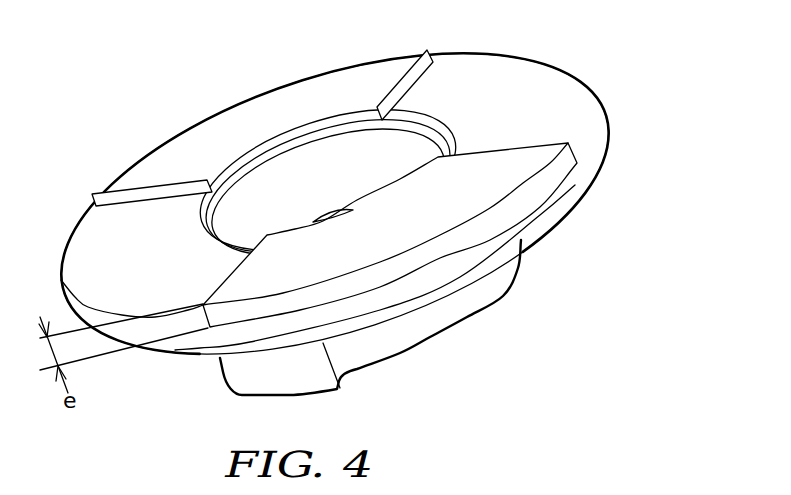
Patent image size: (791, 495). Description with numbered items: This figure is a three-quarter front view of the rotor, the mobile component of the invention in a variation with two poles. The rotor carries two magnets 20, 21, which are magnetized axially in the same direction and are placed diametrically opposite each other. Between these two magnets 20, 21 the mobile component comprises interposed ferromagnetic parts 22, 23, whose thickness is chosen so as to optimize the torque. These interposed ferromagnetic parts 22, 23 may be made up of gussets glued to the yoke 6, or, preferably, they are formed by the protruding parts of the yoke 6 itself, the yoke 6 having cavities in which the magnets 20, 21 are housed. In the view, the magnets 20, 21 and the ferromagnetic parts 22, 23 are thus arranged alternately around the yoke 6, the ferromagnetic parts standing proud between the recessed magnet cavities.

The yoke 6 is at (478, 298).
The magnet 20 is at (468, 199).
The magnet 21 is at (250, 107).
The interposed ferromagnetic part 22 is at (192, 343).
The interposed ferromagnetic part 23 is at (597, 143).